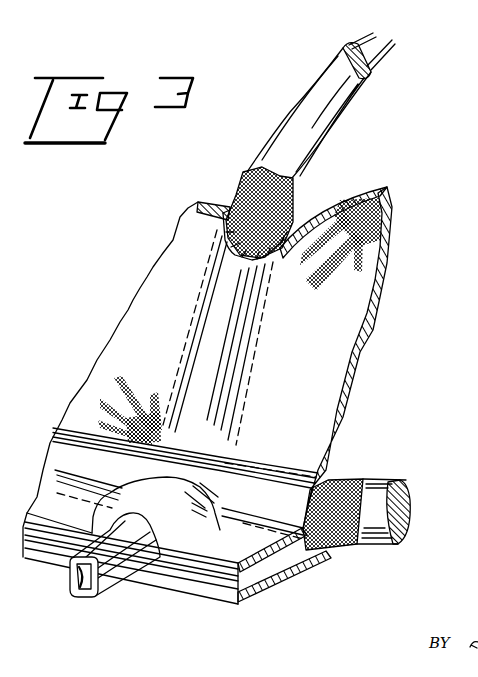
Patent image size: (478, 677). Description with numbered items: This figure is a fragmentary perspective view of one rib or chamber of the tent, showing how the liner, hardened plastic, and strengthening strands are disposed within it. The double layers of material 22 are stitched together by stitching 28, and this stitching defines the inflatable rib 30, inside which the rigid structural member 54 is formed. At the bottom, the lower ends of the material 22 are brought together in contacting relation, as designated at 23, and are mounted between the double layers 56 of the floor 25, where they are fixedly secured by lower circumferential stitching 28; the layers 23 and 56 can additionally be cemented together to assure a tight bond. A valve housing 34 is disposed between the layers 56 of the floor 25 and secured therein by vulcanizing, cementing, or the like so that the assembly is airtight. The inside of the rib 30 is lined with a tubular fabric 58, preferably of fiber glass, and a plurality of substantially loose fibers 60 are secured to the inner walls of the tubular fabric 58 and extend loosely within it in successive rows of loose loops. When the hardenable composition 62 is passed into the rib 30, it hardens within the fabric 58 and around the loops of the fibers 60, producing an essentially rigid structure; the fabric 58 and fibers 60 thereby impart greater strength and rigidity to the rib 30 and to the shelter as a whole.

The material 22 is at (363, 181).
The contacting lower ends of material 23 is at (292, 567).
The floor 25 is at (164, 597).
The stitching 28 is at (276, 360).
The rib 30 is at (67, 446).
The valve housing 34 is at (102, 572).
The rigid structural member 54 is at (349, 117).
The double layers of floor 56 is at (213, 594).
The tubular fabric 58 is at (247, 172).
The loose fibers 60 is at (362, 45).
The hardenable composition 62 is at (333, 67).